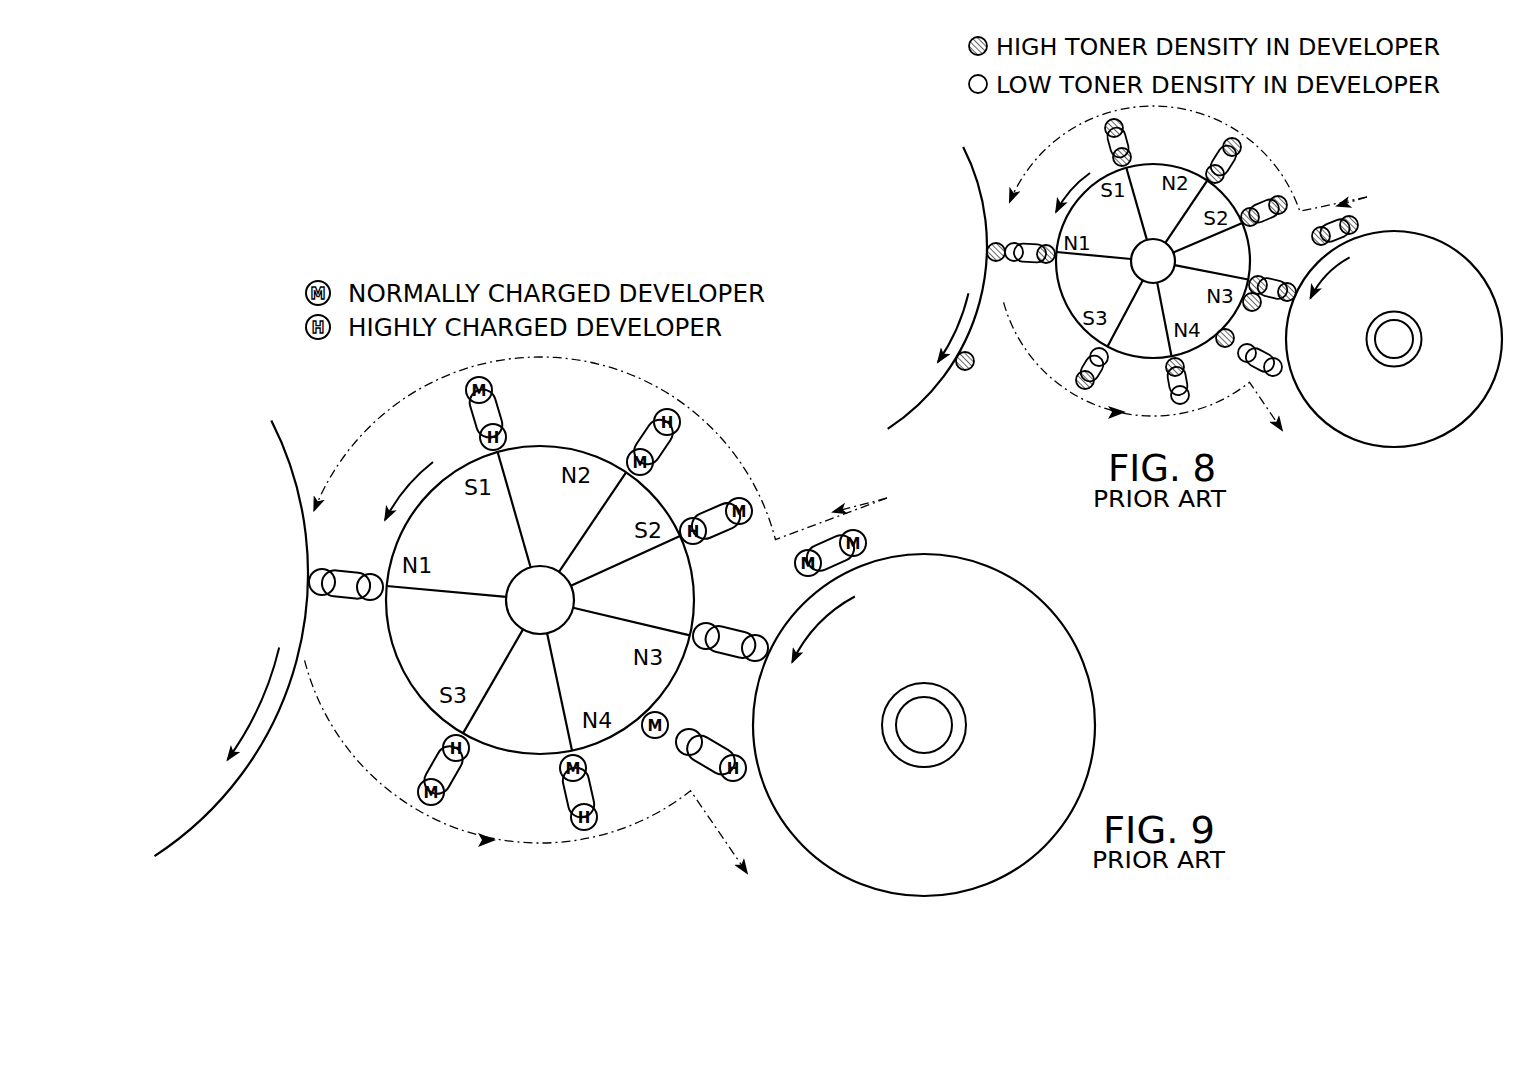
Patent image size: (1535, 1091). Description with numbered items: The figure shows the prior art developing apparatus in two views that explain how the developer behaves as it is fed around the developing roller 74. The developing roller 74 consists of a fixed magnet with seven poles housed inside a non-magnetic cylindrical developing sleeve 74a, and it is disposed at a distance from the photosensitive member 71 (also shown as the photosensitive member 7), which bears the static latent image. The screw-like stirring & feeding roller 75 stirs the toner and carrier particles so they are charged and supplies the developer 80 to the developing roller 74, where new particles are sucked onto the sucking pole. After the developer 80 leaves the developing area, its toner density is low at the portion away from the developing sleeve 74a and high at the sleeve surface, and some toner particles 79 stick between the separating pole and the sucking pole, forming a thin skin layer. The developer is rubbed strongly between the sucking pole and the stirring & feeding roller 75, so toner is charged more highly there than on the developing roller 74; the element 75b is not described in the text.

In FIG. 8, the photosensitive drum 7 is at (968, 155).
In FIG. 9, the photosensitive member 71 is at (274, 444).
In FIG. 9, the developing roller 74 is at (512, 759).
In FIG. 8, the developing roller 74 is at (1148, 364).
In FIG. 9, the developing sleeve 74a is at (403, 677).
In FIG. 8, the developing sleeve 74a is at (1065, 293).
In FIG. 9, the stirring & feeding roller 75 is at (1080, 695).
In FIG. 8, the stirring & feeding roller 75 is at (1455, 265).
In FIG. 9, the magnet roller 75b is at (538, 748).
In FIG. 8, the toner particles 79 is at (1225, 349).
In FIG. 9, the developer 80 is at (346, 596).
In FIG. 8, the developer 80 is at (1032, 262).